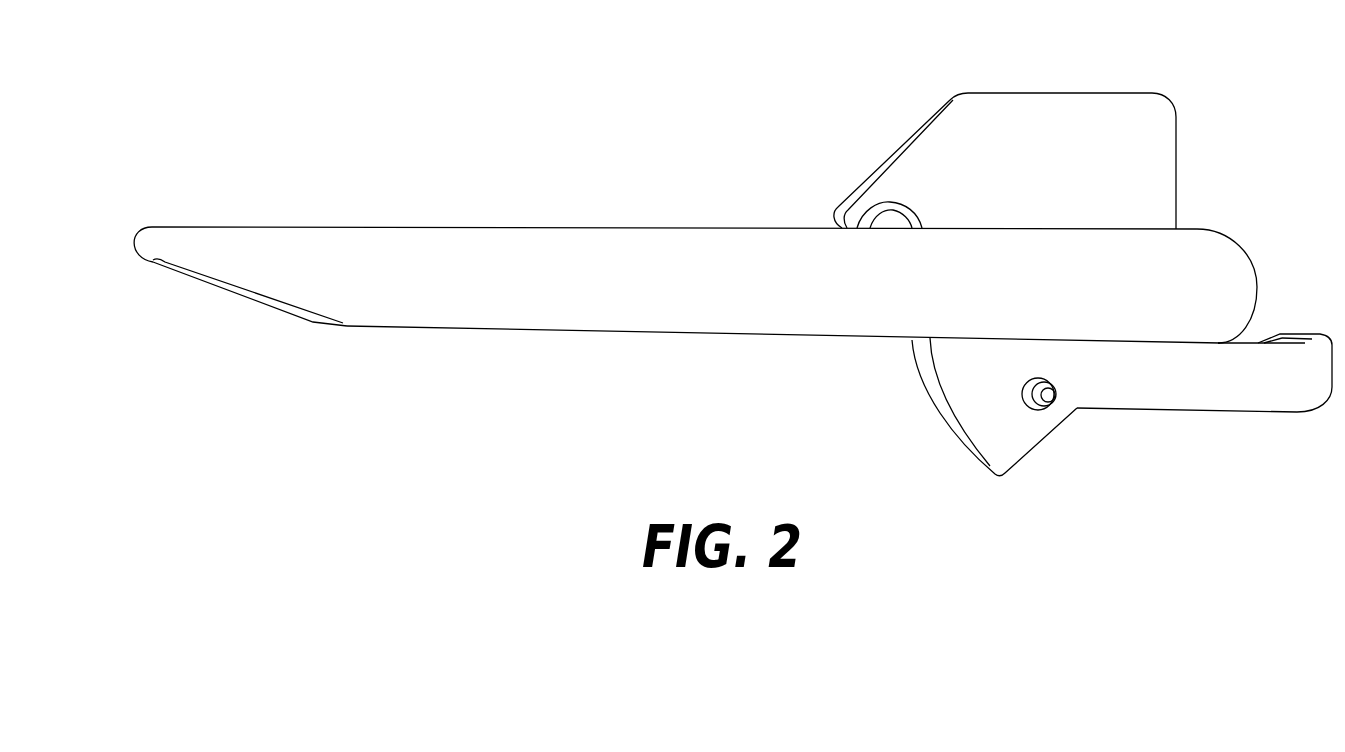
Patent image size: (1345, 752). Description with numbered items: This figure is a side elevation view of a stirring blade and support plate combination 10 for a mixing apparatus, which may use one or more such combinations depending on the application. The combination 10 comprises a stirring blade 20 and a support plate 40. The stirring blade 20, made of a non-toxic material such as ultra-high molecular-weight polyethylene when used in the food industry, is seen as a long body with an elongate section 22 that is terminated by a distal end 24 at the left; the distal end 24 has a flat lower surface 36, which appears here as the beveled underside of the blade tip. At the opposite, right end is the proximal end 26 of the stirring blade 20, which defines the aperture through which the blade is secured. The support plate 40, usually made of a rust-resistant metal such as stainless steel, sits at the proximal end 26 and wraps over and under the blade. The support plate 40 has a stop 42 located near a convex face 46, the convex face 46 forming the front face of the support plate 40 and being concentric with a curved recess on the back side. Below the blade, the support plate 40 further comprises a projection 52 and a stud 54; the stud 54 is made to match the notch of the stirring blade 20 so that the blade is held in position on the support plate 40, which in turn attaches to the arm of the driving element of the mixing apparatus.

The combination 10 is at (619, 76).
The stirring blade 20 is at (542, 218).
The elongate section 22 is at (602, 333).
The distal end 24 is at (248, 226).
The proximal end 26 is at (1221, 258).
The flat lower surface 36 is at (273, 308).
The support plate 40 is at (1186, 157).
The stop 42 is at (835, 219).
The convex face 46 is at (947, 415).
The projection 52 is at (1260, 390).
The stud 54 is at (1057, 395).